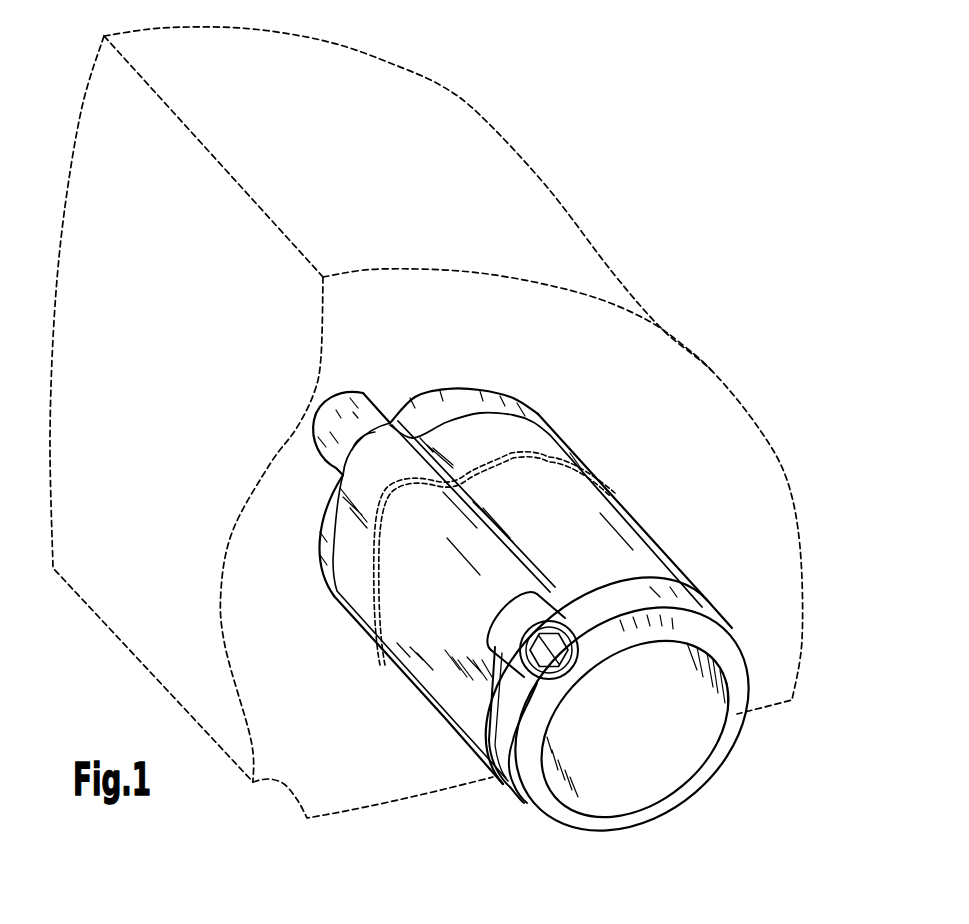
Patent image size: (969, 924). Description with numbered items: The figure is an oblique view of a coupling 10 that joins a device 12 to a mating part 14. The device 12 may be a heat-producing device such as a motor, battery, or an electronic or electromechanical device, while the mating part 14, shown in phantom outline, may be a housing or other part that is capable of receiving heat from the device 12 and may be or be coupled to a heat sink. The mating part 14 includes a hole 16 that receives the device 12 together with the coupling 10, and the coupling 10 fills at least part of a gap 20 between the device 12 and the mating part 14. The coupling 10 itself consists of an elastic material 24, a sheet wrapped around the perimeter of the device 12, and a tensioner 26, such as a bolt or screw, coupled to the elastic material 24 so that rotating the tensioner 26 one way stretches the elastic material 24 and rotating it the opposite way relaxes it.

The coupling 10 is at (386, 767).
The device 12 is at (618, 803).
The mating part 14 is at (262, 762).
The hole 16 is at (622, 483).
The gap 20 is at (386, 672).
The elastic material 24 is at (637, 540).
The tensioner 26 is at (522, 800).